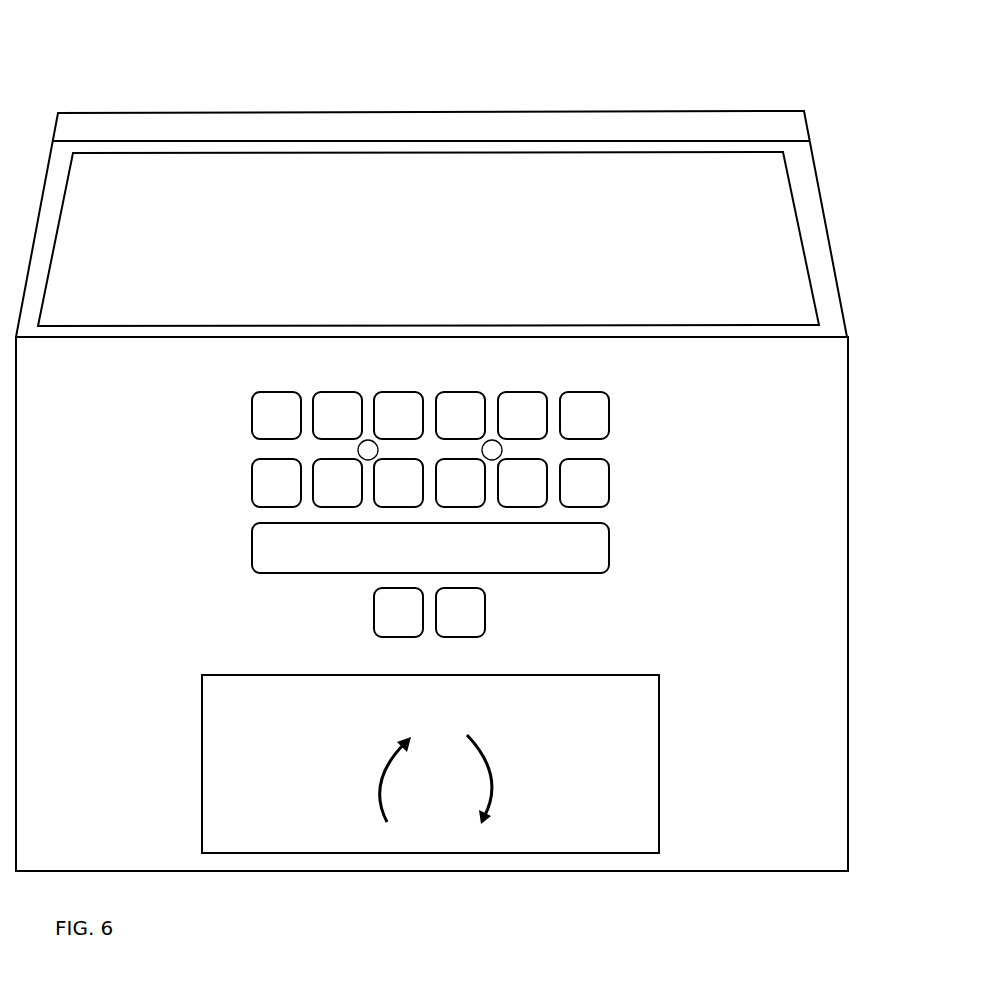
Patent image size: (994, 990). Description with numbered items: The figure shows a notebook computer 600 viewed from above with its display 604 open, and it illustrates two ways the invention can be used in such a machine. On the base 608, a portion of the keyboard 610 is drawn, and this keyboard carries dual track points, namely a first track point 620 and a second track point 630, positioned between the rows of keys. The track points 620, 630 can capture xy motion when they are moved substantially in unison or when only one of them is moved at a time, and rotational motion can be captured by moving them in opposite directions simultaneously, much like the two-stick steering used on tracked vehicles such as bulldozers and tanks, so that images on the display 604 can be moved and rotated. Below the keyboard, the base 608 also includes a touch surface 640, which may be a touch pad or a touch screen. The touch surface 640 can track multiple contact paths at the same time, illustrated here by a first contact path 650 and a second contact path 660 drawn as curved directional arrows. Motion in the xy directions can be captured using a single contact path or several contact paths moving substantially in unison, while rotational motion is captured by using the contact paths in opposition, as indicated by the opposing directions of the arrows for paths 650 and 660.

The notebook computer 600 is at (510, 62).
The display 604 is at (255, 204).
The base 608 is at (730, 798).
The keyboard 610 is at (662, 499).
The first track point 620 is at (358, 449).
The second track point 630 is at (502, 447).
The touch surface 640 is at (615, 708).
The first contact path 650 is at (382, 785).
The second contact path 660 is at (495, 778).